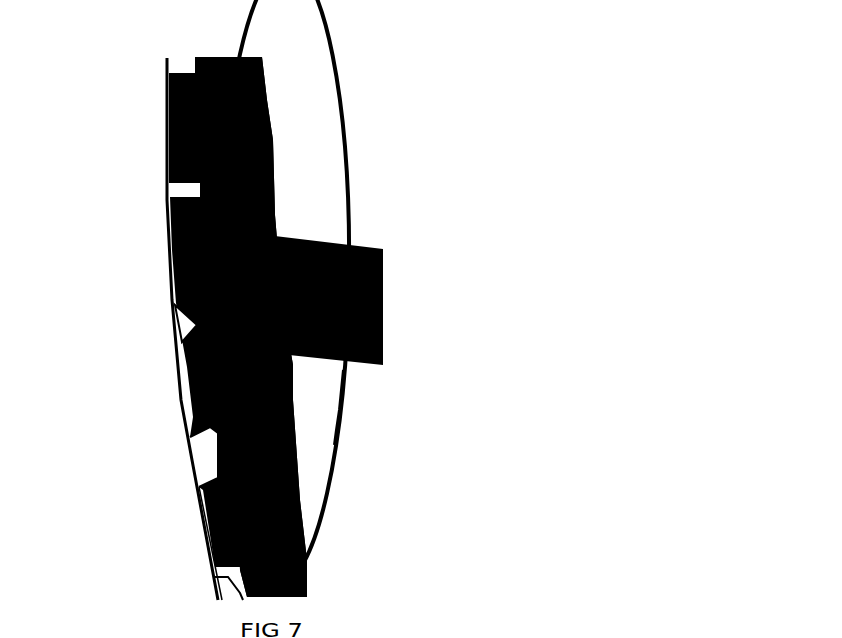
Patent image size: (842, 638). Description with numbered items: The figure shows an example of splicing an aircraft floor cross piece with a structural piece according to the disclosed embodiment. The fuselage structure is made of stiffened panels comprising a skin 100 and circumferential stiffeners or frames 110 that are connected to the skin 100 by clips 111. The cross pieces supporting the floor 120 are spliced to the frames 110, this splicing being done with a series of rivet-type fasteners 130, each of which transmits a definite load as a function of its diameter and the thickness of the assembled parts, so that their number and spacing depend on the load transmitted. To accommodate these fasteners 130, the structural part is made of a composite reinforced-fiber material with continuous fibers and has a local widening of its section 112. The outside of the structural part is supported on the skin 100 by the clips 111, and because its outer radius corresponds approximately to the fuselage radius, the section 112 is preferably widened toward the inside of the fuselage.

The skin 100 is at (167, 65).
The frame 110 is at (263, 82).
The clip 111 is at (298, 518).
The widened section 112 is at (343, 407).
The floor 120 is at (348, 210).
The rivet-type fastener 130 is at (383, 325).